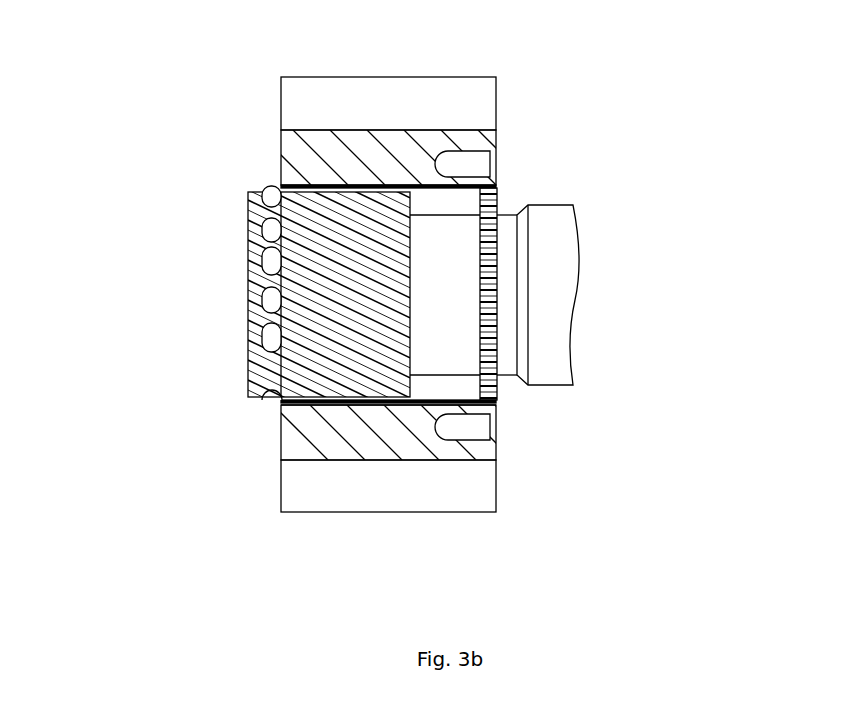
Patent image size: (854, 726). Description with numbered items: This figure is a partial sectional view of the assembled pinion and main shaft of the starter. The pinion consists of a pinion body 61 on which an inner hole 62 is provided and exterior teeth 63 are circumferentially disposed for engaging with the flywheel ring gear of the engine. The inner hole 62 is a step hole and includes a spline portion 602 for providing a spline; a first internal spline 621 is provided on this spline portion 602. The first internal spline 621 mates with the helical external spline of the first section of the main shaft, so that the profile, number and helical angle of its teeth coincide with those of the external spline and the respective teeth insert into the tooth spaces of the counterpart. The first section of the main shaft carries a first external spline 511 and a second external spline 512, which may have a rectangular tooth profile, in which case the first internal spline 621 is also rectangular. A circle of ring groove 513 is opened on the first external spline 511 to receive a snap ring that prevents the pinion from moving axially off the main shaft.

The exterior teeth 63 is at (484, 100).
The pinion body 61 is at (281, 150).
The first internal spline 621 is at (283, 184).
The spline portion 602 is at (283, 408).
The first external spline 511 is at (262, 253).
The ring groove 513 is at (270, 343).
The inner hole 62 is at (493, 183).
The second external spline 512 is at (492, 262).